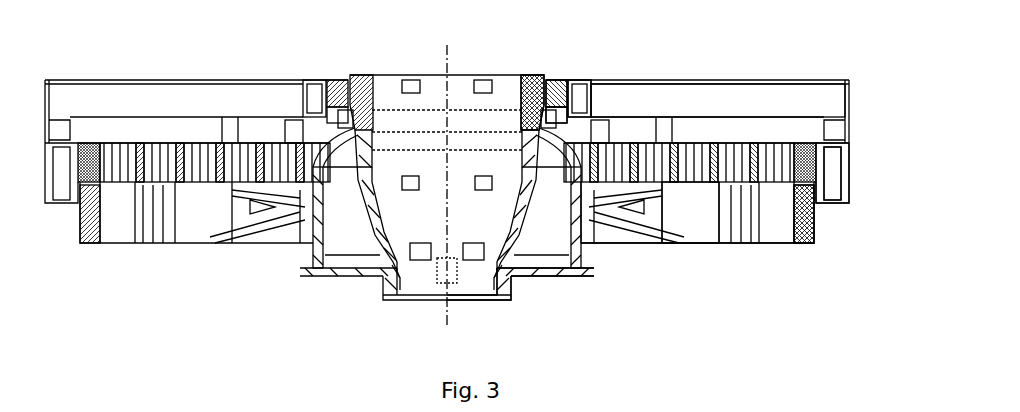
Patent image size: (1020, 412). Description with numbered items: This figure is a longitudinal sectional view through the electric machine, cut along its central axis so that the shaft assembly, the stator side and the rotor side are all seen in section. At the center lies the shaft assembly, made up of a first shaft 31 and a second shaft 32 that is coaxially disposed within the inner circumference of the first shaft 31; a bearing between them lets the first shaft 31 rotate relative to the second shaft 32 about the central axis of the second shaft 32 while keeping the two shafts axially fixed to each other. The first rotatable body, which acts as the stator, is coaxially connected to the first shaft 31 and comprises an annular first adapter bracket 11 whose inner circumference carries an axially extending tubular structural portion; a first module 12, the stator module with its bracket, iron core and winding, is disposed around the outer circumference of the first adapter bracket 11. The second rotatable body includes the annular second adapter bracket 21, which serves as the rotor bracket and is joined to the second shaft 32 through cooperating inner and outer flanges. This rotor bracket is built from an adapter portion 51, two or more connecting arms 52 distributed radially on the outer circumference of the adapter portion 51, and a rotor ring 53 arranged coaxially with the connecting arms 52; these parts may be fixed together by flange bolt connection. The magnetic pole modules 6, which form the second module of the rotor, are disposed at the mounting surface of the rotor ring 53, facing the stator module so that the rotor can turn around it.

The second adapter bracket 21 is at (829, 78).
The connecting arms 52 is at (670, 100).
The rotor ring 53 is at (838, 167).
The magnetic pole modules 6 is at (820, 204).
The first module 12 is at (716, 223).
The first adapter bracket 11 is at (622, 240).
The first shaft 31 is at (532, 275).
The second shaft 32 is at (523, 84).
The adapter portion 51 is at (550, 96).